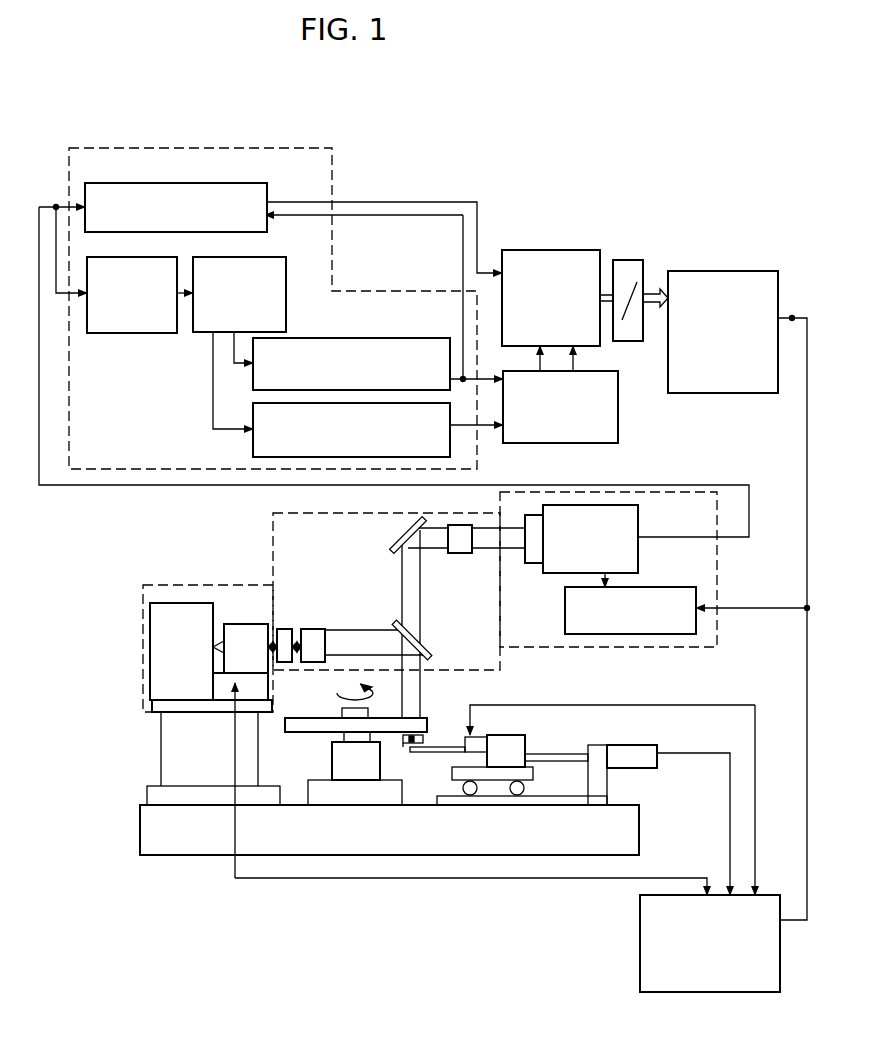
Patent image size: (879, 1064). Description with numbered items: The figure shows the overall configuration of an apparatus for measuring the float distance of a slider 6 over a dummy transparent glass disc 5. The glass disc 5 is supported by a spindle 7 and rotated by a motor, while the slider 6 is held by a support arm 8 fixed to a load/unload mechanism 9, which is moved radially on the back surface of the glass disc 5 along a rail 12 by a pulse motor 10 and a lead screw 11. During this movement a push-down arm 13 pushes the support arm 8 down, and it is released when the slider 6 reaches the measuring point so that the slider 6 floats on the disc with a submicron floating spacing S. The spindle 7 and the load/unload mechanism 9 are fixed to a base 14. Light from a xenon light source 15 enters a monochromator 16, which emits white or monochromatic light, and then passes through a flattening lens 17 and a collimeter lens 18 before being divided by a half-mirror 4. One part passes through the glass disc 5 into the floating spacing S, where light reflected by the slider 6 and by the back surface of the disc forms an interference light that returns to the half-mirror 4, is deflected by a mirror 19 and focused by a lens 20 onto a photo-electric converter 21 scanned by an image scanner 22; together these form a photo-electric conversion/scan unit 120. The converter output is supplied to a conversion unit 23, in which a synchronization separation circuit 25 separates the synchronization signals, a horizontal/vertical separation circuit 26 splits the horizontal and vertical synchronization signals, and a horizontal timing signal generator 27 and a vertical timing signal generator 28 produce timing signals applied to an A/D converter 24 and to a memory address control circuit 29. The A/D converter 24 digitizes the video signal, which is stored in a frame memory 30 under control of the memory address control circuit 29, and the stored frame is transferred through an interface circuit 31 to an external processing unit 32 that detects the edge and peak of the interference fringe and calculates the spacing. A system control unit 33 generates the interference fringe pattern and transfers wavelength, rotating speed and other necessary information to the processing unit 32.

The half-mirror 4 is at (400, 626).
The dummy transparent glass disc 5 is at (292, 733).
The slider 6 is at (403, 745).
The spindle 7 is at (332, 766).
The support arm 8 is at (442, 753).
The load/unload mechanism 9 is at (525, 752).
The pulse motor 10 is at (647, 768).
The lead screw 11 is at (565, 754).
The rail 12 is at (545, 796).
The push-down arm 13 is at (464, 728).
The base 14 is at (200, 855).
The xenon light source 15 is at (175, 603).
The monochromator 16 is at (240, 624).
The flattening lens 17 is at (285, 629).
The collimeter lens 18 is at (318, 629).
The mirror 19 is at (398, 540).
The lens 20 is at (460, 553).
The photo-electric converter 21 is at (638, 560).
The image scanner 22 is at (565, 620).
The conversion unit 23 is at (240, 148).
The A/D converter 24 is at (113, 183).
The synchronization separation circuit 25 is at (147, 333).
The horizontal/vertical separation circuit 26 is at (286, 280).
The horizontal timing signal generator 27 is at (383, 338).
The vertical timing signal generator 28 is at (253, 440).
The memory address control circuit 29 is at (618, 405).
The frame memory 30 is at (548, 250).
The interface circuit 31 is at (622, 260).
The processing unit 32 is at (722, 271).
The system control unit 33 is at (663, 992).
The photo-electric conversion/scan unit 120 is at (717, 562).
The floating spacing S is at (424, 739).